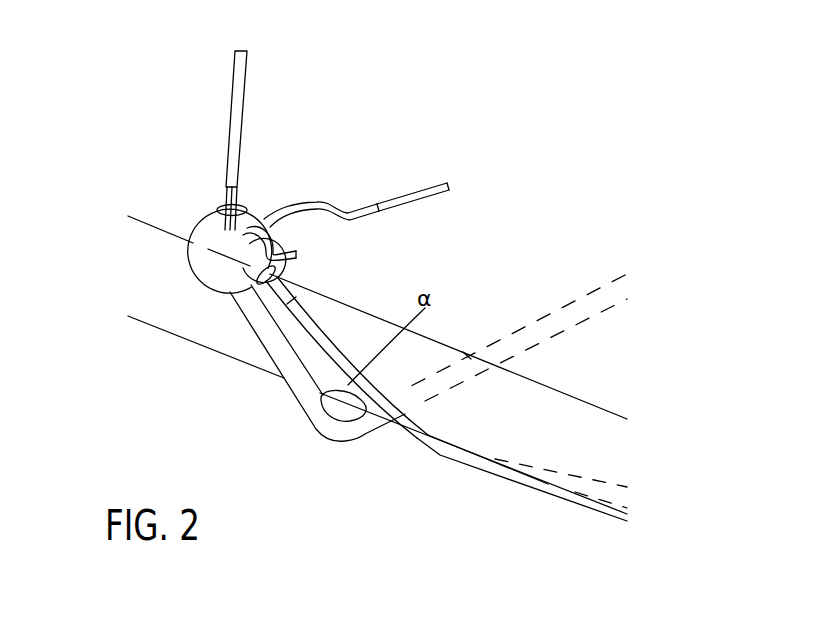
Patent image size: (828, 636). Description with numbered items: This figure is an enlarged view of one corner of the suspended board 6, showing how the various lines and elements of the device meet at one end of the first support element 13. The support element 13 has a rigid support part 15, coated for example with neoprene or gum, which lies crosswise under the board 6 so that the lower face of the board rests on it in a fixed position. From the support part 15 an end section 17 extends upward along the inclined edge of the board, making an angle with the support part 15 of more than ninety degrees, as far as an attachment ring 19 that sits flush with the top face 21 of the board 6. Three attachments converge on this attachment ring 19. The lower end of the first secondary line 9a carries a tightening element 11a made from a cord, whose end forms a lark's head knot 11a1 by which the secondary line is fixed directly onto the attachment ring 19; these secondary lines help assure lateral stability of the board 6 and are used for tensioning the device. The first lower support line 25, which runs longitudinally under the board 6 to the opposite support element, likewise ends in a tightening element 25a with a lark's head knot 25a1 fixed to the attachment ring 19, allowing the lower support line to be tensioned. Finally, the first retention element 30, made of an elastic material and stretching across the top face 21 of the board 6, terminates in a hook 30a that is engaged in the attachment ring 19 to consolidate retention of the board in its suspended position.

The board 6 is at (131, 359).
The first secondary line 9a is at (183, 119).
The tightening element 11a is at (230, 130).
The lark's head knot 11a1 is at (221, 204).
The first support element 13 is at (317, 415).
The support part 15 is at (203, 348).
The end section 17 is at (303, 395).
The attachment ring 19 is at (201, 235).
The top face 21 is at (478, 270).
The first lower support line 25 is at (440, 415).
The tightening element 25a is at (312, 328).
The lark's head knot 25a1 is at (279, 270).
The first retention element 30 is at (410, 196).
The hook 30a is at (294, 204).